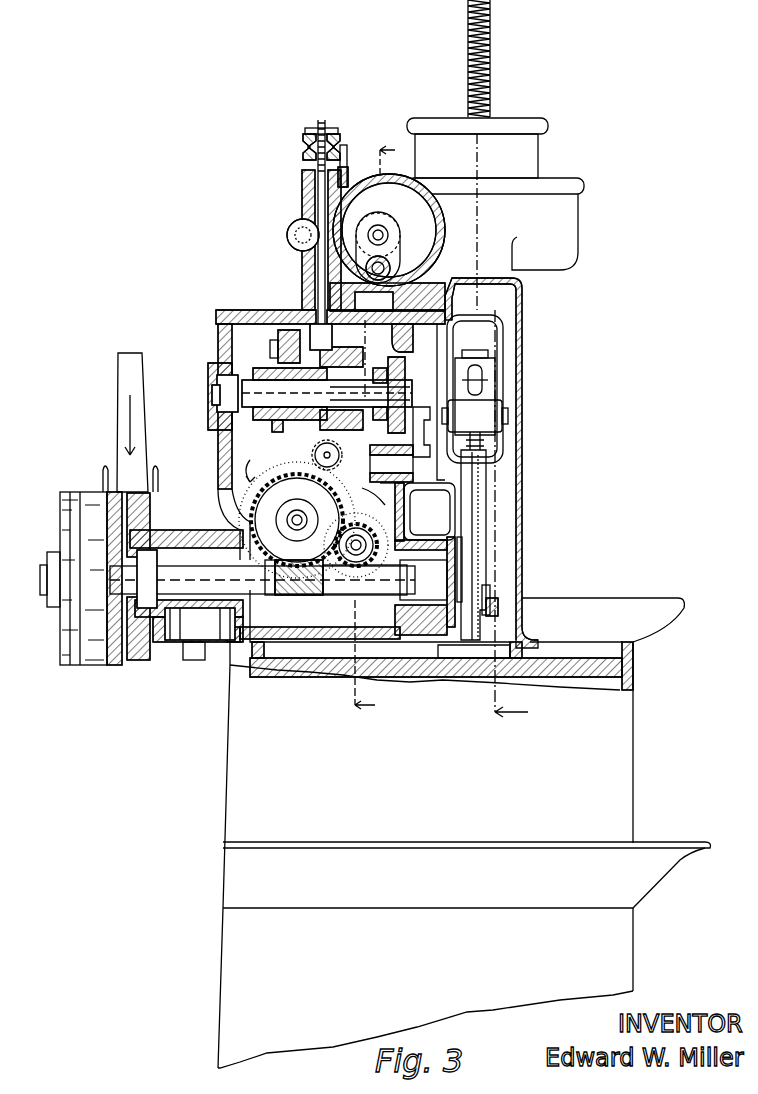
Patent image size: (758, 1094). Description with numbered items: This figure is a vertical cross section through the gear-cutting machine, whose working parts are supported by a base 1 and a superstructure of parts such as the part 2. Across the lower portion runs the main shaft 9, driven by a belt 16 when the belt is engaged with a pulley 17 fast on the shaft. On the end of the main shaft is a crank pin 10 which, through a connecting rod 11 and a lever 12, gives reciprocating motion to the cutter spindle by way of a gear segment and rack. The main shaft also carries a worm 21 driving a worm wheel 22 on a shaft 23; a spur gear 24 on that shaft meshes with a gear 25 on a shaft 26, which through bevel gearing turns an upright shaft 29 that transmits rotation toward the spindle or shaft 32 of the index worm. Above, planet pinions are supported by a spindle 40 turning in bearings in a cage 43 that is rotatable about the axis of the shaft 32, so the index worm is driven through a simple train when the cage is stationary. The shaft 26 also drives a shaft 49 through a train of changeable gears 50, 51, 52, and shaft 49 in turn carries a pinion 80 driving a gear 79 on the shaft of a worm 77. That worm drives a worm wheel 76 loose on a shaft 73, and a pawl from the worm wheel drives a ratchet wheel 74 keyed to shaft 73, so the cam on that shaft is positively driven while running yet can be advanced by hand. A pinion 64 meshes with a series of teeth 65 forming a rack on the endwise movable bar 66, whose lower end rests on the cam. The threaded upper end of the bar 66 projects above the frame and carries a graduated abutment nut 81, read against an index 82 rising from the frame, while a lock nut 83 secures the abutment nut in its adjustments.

The base 1 is at (519, 518).
The superstructure 2 is at (382, 429).
The main shaft 9 is at (240, 585).
The crank pin 10 is at (498, 606).
The connecting rod 11 is at (480, 535).
The lever 12 is at (490, 393).
The belt 16 is at (130, 380).
The pulley 17 is at (110, 530).
The worm 21 is at (290, 592).
The worm wheel 22 is at (273, 592).
The shaft 23 is at (288, 520).
The spur gear 24 is at (262, 548).
The gear 25 is at (368, 562).
The shaft 26 is at (355, 555).
The upright shaft 29 is at (459, 389).
The worm shaft 32 is at (380, 232).
The spindle 40 is at (388, 266).
The cage 43 is at (392, 246).
The shaft 49 is at (322, 452).
The changeable gear 50 is at (400, 540).
The changeable gear 51 is at (295, 529).
The changeable gear 52 is at (429, 511).
The pinion 64 is at (290, 242).
The teeth 65 is at (302, 214).
The endwise movable bar 66 is at (318, 282).
The shaft 73 is at (260, 392).
The ratchet wheel 74 is at (278, 362).
The worm wheel 76 is at (292, 322).
The worm 77 is at (275, 442).
The gear 79 is at (297, 507).
The pinion 80 is at (362, 470).
The nut 81 is at (303, 150).
The index 82 is at (348, 166).
The lock nut 83 is at (305, 131).